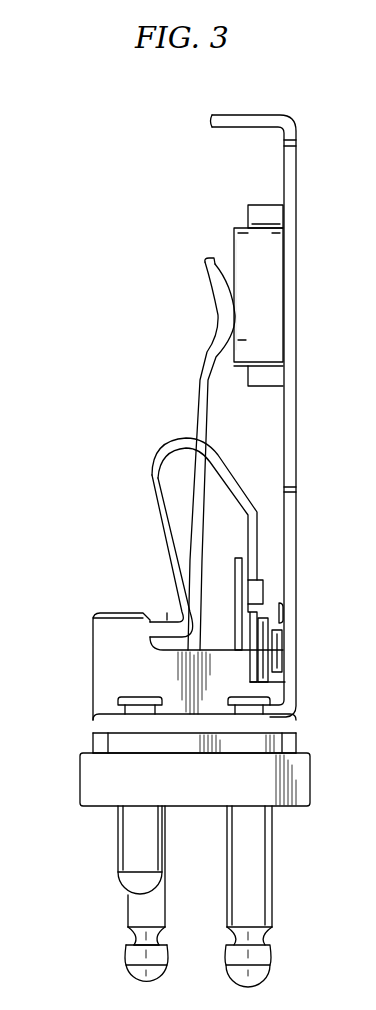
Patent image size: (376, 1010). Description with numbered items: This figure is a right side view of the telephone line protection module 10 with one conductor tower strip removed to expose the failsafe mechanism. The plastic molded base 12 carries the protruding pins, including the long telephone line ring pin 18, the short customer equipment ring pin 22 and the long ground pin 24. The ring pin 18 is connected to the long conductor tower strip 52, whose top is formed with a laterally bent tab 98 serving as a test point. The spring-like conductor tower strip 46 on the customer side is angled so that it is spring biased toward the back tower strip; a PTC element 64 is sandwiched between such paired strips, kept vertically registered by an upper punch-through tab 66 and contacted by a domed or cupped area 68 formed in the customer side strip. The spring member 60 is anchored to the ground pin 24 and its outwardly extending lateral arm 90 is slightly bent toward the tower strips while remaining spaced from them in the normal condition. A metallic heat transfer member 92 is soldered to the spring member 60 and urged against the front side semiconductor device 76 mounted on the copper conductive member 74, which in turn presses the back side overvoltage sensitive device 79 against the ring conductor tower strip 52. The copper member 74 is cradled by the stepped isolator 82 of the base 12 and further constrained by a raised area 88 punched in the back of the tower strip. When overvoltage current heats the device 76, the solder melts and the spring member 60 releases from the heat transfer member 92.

The telephone line protection module 10 is at (158, 305).
The plastic molded base 12 is at (78, 775).
The telephone line ring pin 18 is at (273, 865).
The customer equipment ring pin 22 is at (118, 845).
The ground pin 24 is at (128, 908).
The conductor tower strip 46 is at (200, 378).
The conductor tower strip 52 is at (296, 442).
The spring member 60 is at (152, 490).
The PTC element 64 is at (234, 245).
The upper punch-through tab 66 is at (264, 205).
The domed or cupped area 68 is at (240, 316).
The copper conductive member 74 is at (263, 640).
The front side semiconductor device 76 is at (252, 617).
The semiconductor overvoltage sensitive device 79 is at (280, 657).
The stepped isolator 82 is at (93, 645).
The raised area 88 is at (284, 604).
The lateral arm 90 is at (263, 582).
The heat transfer member 92 is at (237, 563).
The laterally bent tab 98 is at (250, 115).